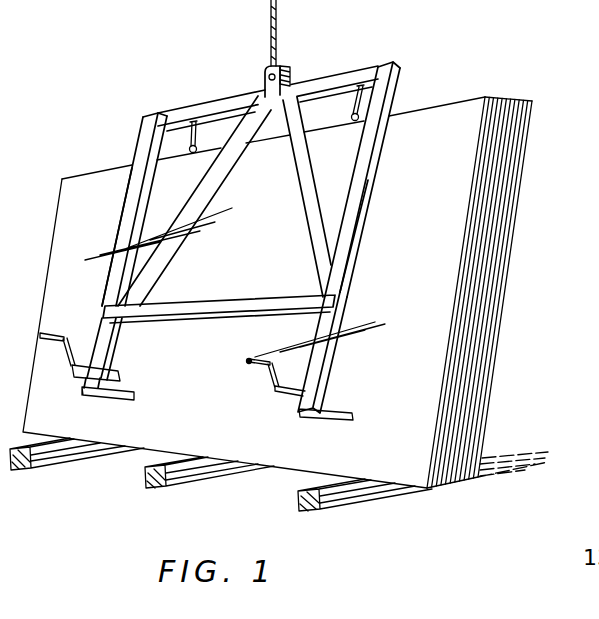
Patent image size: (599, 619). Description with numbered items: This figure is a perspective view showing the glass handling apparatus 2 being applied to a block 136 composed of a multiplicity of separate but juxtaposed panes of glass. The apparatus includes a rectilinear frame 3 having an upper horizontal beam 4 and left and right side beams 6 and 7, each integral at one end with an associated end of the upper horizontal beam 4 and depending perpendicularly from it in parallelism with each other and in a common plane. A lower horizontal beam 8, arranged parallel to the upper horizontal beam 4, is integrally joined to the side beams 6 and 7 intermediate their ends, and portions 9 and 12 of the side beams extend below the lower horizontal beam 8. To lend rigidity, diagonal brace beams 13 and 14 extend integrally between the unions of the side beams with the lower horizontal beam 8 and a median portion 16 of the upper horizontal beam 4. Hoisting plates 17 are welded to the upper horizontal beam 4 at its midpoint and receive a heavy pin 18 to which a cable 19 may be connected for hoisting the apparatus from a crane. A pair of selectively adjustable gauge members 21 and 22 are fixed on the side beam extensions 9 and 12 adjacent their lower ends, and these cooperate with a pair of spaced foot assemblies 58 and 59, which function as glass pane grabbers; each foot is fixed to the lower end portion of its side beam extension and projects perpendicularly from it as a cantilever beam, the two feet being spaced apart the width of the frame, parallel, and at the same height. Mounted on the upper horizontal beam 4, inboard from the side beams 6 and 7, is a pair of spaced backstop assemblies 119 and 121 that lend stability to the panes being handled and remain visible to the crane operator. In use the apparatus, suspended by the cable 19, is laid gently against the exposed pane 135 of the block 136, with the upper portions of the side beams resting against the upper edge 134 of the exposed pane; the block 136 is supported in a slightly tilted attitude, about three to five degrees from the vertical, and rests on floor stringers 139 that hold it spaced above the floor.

The glass handling apparatus 2 is at (184, 101).
The rectilinear frame 3 is at (135, 136).
The upper horizontal beam 4 is at (352, 67).
The left side beam 6 is at (130, 191).
The right side beam 7 is at (363, 198).
The lower horizontal beam 8 is at (252, 305).
The left side beam extension 9 is at (98, 336).
The right side beam extension 12 is at (328, 360).
The diagonal brace beam 13 is at (220, 158).
The diagonal brace beam 14 is at (304, 203).
The median portion of upper horizontal beam 16 is at (266, 90).
The hoisting plate 17 is at (292, 70).
The heavy pin 18 is at (271, 72).
The cable 19 is at (278, 35).
The adjustable gauge member 21 is at (78, 383).
The adjustable gauge member 22 is at (285, 410).
The foot assembly 58 is at (110, 412).
The foot assembly 59 is at (328, 435).
The backstop assembly 119 is at (201, 136).
The backstop assembly 121 is at (350, 97).
The upper edge of exposed pane 134 is at (497, 99).
The exposed pane 135 is at (465, 115).
The block of glass panes 136 is at (519, 95).
The floor stringers 139 is at (492, 466).